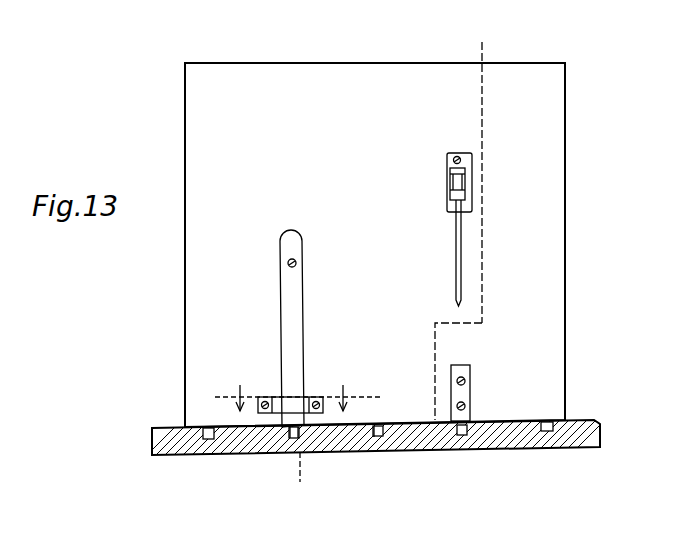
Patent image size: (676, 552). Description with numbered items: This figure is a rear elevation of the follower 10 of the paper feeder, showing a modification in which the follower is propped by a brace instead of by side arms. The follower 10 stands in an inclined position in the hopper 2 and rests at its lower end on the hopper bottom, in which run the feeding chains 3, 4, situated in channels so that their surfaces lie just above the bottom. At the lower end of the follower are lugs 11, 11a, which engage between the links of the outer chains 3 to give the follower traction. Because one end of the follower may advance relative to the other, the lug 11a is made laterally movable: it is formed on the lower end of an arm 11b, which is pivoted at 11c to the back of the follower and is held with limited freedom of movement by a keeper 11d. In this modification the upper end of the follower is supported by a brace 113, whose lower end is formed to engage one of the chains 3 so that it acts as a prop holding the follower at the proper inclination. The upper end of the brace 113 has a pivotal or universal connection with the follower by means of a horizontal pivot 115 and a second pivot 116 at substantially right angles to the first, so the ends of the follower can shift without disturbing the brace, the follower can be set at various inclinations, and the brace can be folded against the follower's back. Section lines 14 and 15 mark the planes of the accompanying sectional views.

The hopper 2 is at (190, 456).
The feeding chain 3 is at (208, 430).
The feeding chain 4 is at (380, 440).
The follower 10 is at (371, 70).
The lug 11 is at (461, 432).
The lug 11a is at (289, 436).
The arm 11b is at (291, 356).
The pivot 11c is at (297, 262).
The keeper 11d is at (308, 396).
The section line 14- 14 is at (490, 44).
The section line 15- 15 is at (296, 394).
The brace 113 is at (462, 260).
The horizontal pivot 115 is at (466, 182).
The pivot 116 is at (471, 167).